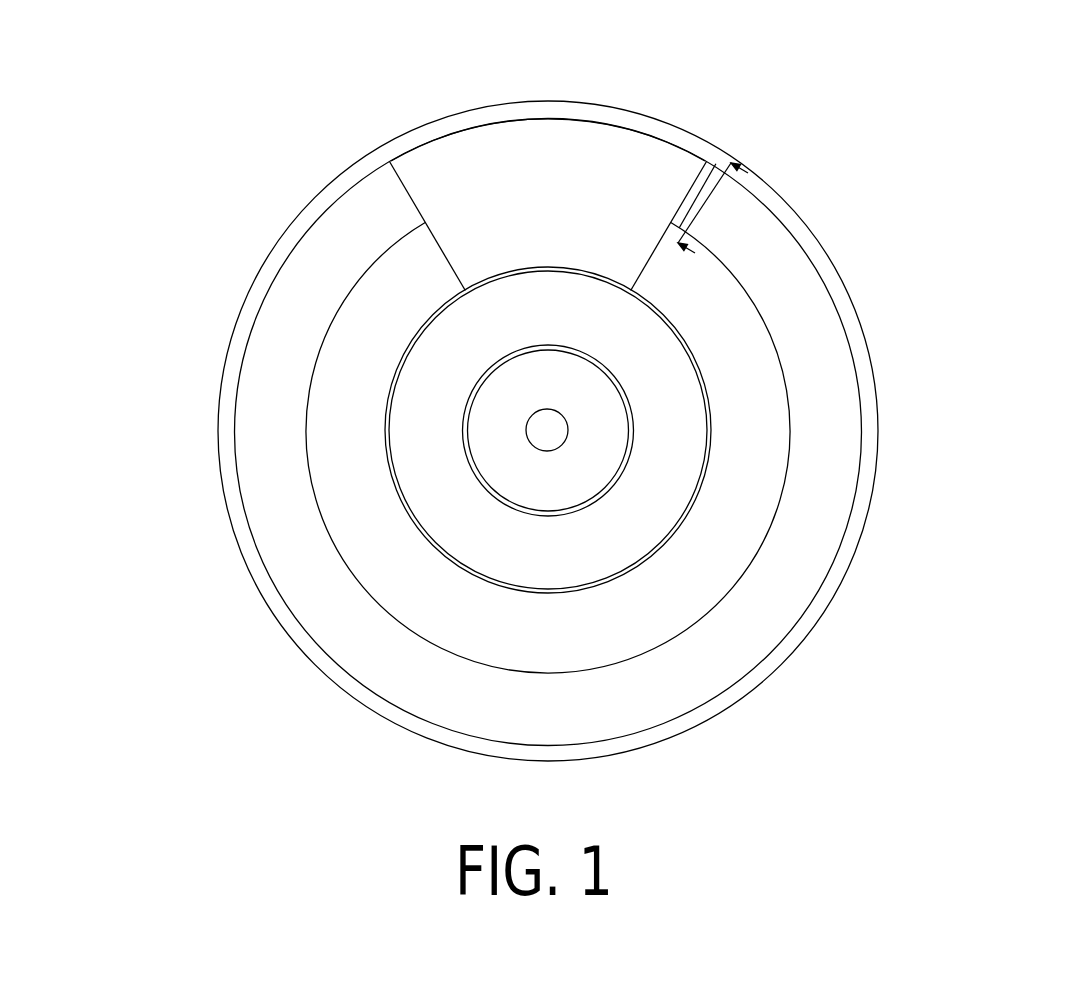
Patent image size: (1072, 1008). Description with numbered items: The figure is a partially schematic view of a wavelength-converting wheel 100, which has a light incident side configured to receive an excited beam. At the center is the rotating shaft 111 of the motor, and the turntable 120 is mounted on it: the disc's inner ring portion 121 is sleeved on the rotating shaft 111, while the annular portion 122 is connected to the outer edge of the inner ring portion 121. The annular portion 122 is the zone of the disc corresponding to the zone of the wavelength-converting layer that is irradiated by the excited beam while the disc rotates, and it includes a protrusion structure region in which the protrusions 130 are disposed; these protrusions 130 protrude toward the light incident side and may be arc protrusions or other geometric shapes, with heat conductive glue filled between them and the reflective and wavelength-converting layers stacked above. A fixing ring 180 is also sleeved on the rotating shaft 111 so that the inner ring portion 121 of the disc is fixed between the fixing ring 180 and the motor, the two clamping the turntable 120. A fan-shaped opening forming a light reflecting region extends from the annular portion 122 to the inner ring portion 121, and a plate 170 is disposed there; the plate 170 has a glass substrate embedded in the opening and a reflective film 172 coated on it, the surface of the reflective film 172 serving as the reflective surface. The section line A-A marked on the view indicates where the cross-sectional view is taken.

The wavelength-converting wheel 100 is at (124, 145).
The rotating shaft 111 is at (576, 471).
The turntable 120 is at (828, 266).
The inner ring portion 121 is at (727, 313).
The annular portion 122 is at (803, 231).
The protrusions 130 is at (752, 204).
The plate 170 is at (523, 140).
The reflective film 172 is at (567, 148).
The fixing ring 180 is at (682, 420).